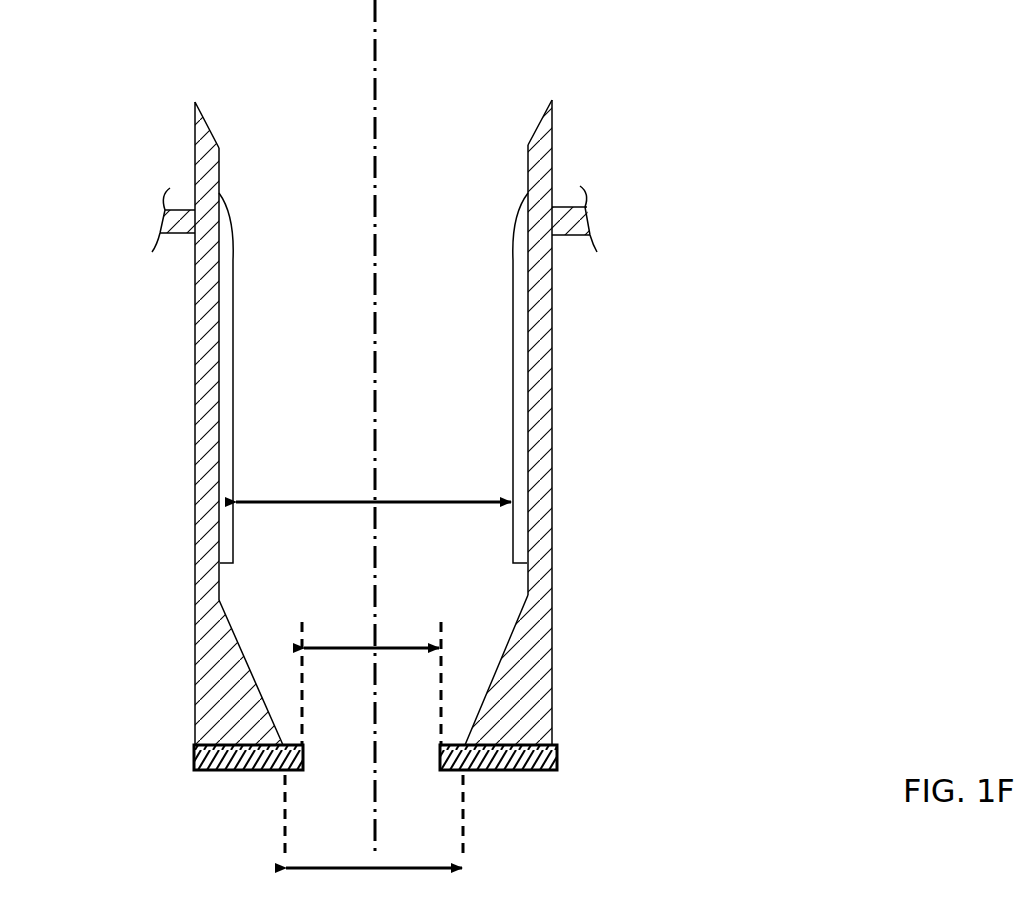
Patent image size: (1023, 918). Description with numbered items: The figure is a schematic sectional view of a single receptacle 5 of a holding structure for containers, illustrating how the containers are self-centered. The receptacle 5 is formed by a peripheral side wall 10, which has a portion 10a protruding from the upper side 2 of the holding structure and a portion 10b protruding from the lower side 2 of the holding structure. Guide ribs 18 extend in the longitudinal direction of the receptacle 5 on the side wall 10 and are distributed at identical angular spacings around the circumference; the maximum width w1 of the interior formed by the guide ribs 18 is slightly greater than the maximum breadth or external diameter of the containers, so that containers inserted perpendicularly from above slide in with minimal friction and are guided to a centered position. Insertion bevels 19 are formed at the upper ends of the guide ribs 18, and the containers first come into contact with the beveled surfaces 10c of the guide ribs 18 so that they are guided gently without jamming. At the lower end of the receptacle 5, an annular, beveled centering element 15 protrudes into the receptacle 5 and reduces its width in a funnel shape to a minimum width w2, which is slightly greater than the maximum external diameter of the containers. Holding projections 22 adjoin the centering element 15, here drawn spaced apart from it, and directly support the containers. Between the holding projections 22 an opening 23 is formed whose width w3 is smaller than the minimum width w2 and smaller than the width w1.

The receptacle 5 is at (410, 90).
The peripheral side wall 10 is at (195, 288).
The portion protruding from the upper side 10a is at (538, 158).
The portion protruding from the lower side 10b is at (540, 394).
The beveled surfaces 10c is at (542, 123).
The upper side / lower side of the holding structure 2 is at (577, 218).
The insertion bevels 19 is at (520, 218).
The guide ribs 18 is at (512, 317).
The centering element 15 is at (490, 683).
The holding projections 22 is at (296, 755).
The opening 23 is at (398, 758).
The maximum width of the interior w1 is at (373, 483).
The minimum width w2 is at (374, 821).
The width of the opening w3 is at (371, 678).